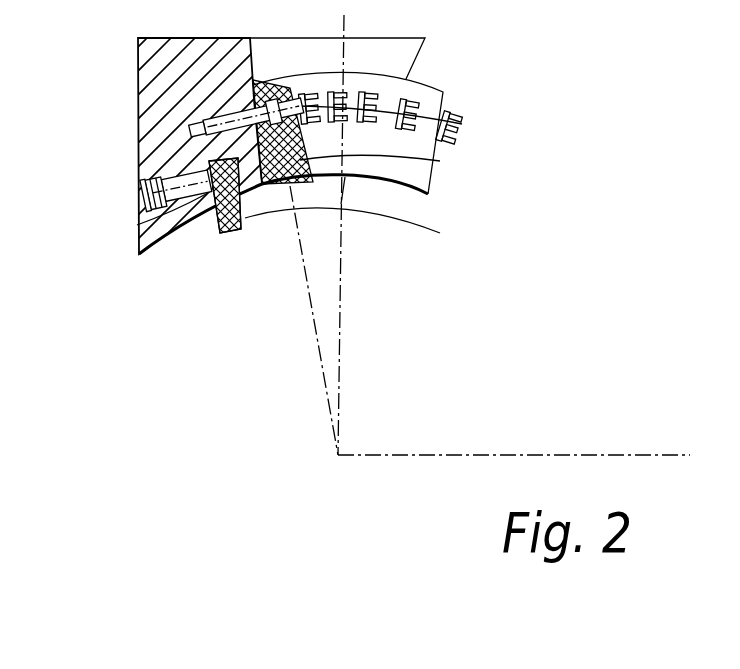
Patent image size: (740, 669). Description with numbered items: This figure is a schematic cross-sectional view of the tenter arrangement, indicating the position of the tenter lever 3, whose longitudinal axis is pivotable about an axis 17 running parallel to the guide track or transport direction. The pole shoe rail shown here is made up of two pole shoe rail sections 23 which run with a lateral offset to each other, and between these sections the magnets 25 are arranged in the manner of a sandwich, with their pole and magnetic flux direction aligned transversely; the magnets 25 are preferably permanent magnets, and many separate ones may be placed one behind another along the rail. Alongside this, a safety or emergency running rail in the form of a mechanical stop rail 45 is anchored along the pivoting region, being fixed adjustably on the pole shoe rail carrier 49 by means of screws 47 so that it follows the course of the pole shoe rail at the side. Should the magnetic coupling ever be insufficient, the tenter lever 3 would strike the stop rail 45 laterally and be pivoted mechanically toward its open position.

The pole shoe rail carrier 49 is at (138, 82).
The screws 47 is at (142, 197).
The stop rail 45 is at (250, 214).
The magnets 25 is at (440, 161).
The pole shoe rail sections 23 is at (314, 220).
The tenter lever 3 is at (341, 288).
The axis 17 is at (338, 455).